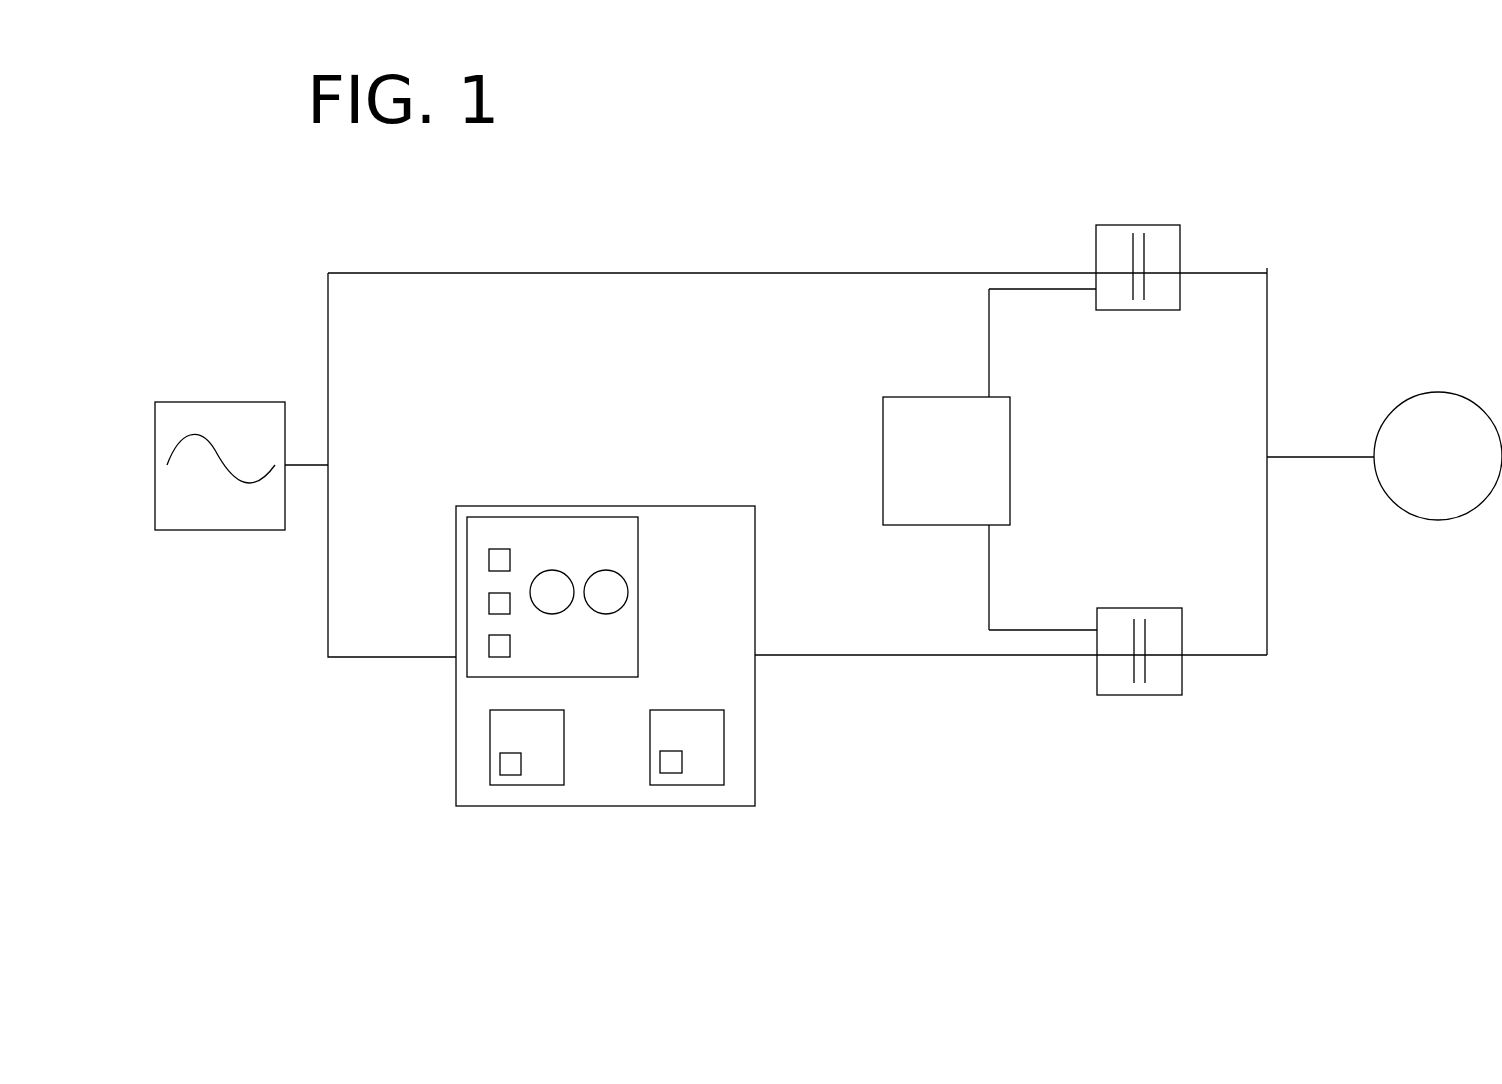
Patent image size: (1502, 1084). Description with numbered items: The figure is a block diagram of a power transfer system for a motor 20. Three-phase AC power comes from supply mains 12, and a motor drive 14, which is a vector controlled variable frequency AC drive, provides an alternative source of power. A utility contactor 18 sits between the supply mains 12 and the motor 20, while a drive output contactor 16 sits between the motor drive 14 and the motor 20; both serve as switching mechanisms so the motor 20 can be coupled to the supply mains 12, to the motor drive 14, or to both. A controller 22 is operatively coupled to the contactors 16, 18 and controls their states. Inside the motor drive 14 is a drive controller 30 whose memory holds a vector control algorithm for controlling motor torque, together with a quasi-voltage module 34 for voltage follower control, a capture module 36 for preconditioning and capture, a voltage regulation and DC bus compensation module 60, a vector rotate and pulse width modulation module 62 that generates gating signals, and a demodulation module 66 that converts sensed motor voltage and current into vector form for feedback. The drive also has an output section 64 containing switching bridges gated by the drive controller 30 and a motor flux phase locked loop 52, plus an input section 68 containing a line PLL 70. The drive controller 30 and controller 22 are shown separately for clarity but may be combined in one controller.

The supply mains 12 is at (205, 408).
The motor drive 14 is at (718, 503).
The drive output contactor 16 is at (1106, 668).
The utility contactor 18 is at (1102, 247).
The motor 20 is at (1413, 488).
The controller 22 is at (882, 428).
The drive controller 30 is at (515, 519).
The quasi-voltage module 34 is at (552, 571).
The capture module 36 is at (607, 571).
The motor flux phase locked loop 52 is at (674, 766).
The voltage regulation and DC bus compensation module 60 is at (488, 560).
The vector rotate and pulse width modulation module 62 is at (488, 604).
The output section 64 is at (712, 736).
The demodulation module 66 is at (488, 646).
The input section 68 is at (498, 724).
The line PLL 70 is at (516, 768).